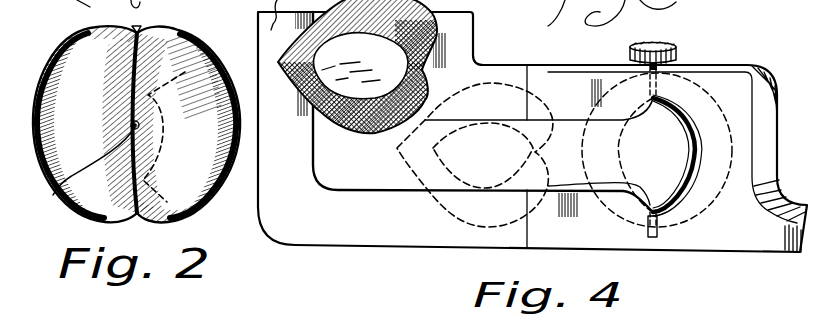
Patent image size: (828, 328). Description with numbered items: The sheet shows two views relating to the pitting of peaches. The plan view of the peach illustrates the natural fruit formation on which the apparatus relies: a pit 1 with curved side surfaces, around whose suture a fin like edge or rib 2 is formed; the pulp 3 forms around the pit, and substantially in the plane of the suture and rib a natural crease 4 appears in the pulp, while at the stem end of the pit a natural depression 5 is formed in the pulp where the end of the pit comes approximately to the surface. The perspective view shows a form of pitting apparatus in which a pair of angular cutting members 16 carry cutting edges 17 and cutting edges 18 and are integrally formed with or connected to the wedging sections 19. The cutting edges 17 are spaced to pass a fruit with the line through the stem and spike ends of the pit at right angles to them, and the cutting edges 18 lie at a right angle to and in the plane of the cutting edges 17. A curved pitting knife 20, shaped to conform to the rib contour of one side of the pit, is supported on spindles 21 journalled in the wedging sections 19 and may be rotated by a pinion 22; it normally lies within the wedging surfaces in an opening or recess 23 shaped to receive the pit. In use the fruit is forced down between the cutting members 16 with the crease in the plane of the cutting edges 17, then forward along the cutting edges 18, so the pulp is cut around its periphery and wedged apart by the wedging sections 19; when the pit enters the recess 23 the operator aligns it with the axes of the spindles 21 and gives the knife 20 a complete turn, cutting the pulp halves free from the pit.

In FIG. 2, the pit 1 is at (210, 53).
In FIG. 2, the fin like edge or rib 2 is at (197, 208).
In FIG. 2, the pulp 3 is at (65, 50).
In FIG. 2, the natural crease 4 is at (138, 33).
In FIG. 2, the natural depression 5 is at (53, 195).
In FIG. 4, the angular cutting members 16 is at (452, 50).
In FIG. 4, the cutting edges 17 is at (362, 128).
In FIG. 4, the cutting edges 18 is at (478, 188).
In FIG. 4, the wedging sections 19 is at (570, 83).
In FIG. 4, the curved pitting knife 20 is at (698, 155).
In FIG. 4, the spindles 21 is at (660, 63).
In FIG. 4, the pinion 22 is at (668, 44).
In FIG. 4, the opening or recess 23 is at (528, 198).